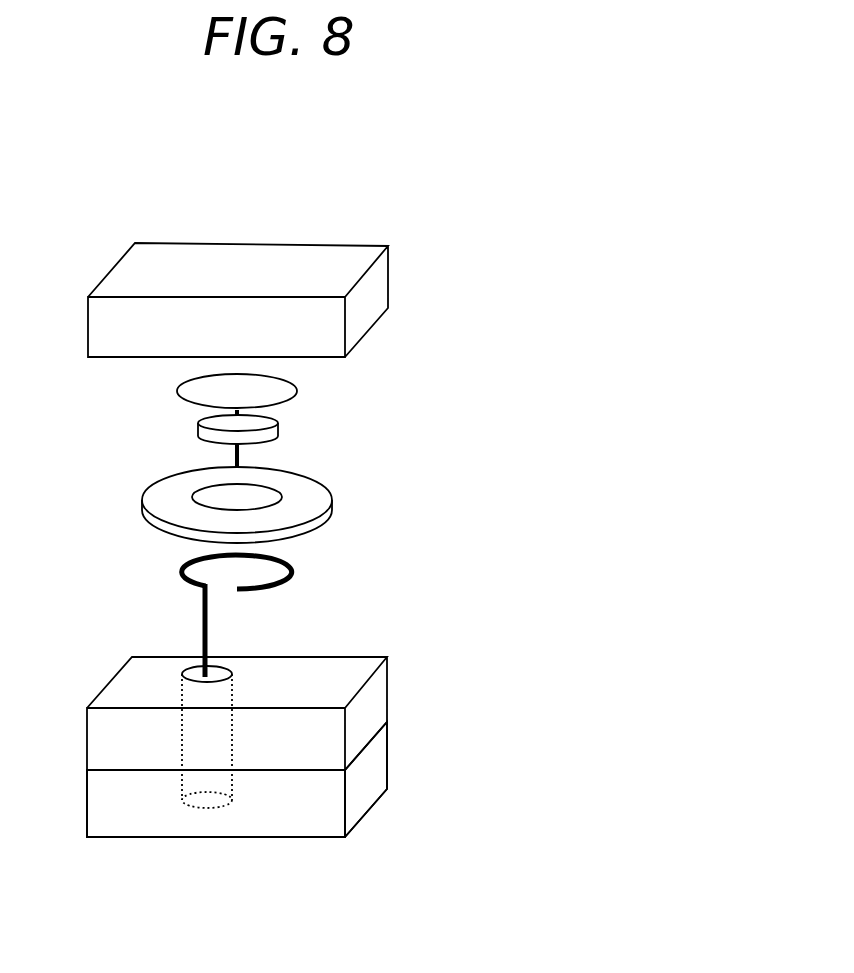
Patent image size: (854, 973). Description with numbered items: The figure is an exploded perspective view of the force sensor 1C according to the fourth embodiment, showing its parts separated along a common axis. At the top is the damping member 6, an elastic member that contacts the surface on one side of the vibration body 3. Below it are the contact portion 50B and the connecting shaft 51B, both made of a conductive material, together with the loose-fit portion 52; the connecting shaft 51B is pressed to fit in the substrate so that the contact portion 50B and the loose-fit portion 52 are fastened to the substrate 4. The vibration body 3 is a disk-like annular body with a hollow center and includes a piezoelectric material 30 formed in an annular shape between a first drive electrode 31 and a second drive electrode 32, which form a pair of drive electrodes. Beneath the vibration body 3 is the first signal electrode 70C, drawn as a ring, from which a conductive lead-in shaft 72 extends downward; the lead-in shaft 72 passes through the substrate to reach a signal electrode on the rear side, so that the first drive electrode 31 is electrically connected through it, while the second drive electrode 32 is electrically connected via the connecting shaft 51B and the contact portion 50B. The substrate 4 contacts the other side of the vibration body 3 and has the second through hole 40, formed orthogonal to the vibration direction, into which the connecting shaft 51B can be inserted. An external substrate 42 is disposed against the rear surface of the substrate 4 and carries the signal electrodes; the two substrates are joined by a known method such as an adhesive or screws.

The force sensor 1C is at (446, 395).
The damping member 6 is at (344, 253).
The contact portion 50B is at (289, 383).
The connecting shaft 51B is at (245, 448).
The loose-fit portion 52 is at (210, 433).
The vibration body 3 is at (310, 508).
The piezoelectric material 30 is at (291, 510).
The first drive electrode 31 is at (291, 532).
The second drive electrode 32 is at (317, 493).
The first signal electrode 70C is at (187, 563).
The lead-in shaft 72 is at (203, 620).
The substrate 4 is at (285, 781).
The external substrate 42 is at (377, 767).
The second through hole 40 is at (215, 818).